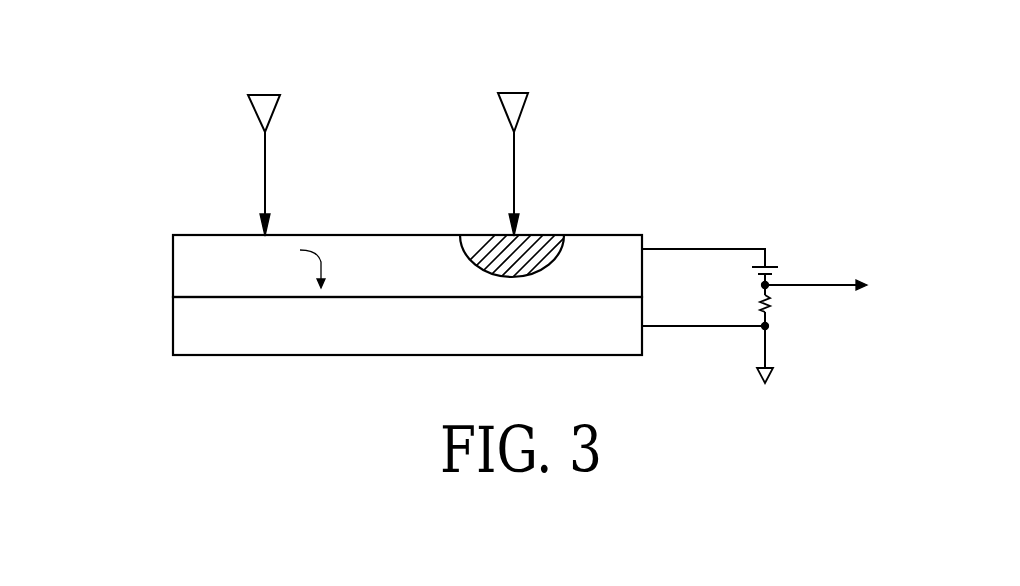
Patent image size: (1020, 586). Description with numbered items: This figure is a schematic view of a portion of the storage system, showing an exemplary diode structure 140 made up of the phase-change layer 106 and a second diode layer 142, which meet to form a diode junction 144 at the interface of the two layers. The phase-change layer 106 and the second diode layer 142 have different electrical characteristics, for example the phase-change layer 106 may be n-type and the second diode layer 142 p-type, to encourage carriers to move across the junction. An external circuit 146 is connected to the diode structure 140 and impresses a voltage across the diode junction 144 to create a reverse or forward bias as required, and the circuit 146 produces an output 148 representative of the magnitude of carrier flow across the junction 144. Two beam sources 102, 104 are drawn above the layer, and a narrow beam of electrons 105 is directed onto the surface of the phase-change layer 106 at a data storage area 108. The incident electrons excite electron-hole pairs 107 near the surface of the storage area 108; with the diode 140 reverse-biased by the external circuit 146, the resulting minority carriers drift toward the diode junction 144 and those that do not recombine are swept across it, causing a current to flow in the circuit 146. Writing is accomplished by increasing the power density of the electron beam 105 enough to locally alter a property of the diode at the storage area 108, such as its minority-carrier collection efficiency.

The first radiation beam (particle/photon source) 102 is at (266, 100).
The second radiation beam (particle/photon source) 104 is at (515, 98).
The narrow beam of electrons 105 is at (515, 148).
The phase-change layer 106 is at (172, 260).
The electron-hole pairs 107 is at (492, 234).
The data storage area 108 is at (293, 223).
The diode structure 140 is at (338, 320).
The second diode layer 142 is at (187, 357).
The diode junction 144 is at (222, 297).
The external circuit 146 is at (804, 261).
The output 148 is at (837, 285).